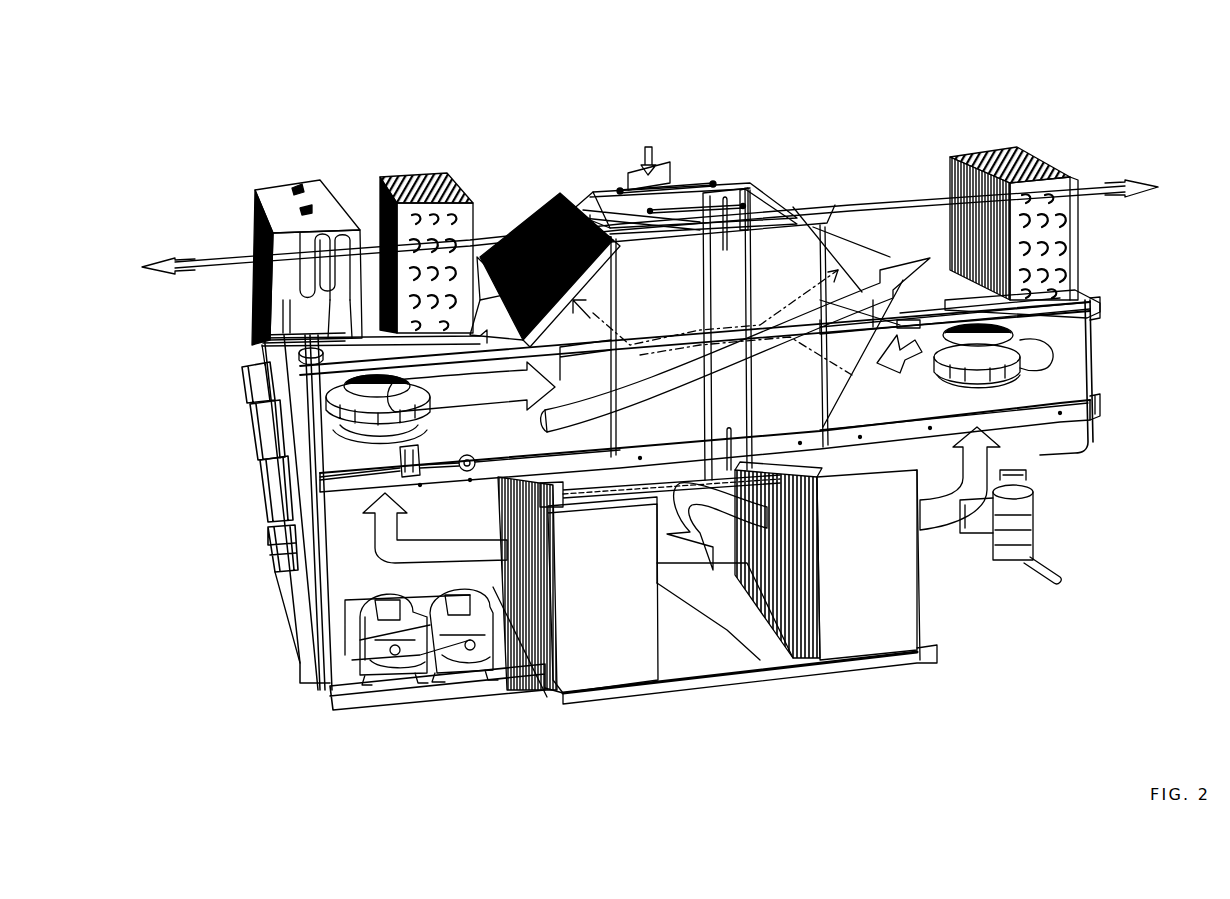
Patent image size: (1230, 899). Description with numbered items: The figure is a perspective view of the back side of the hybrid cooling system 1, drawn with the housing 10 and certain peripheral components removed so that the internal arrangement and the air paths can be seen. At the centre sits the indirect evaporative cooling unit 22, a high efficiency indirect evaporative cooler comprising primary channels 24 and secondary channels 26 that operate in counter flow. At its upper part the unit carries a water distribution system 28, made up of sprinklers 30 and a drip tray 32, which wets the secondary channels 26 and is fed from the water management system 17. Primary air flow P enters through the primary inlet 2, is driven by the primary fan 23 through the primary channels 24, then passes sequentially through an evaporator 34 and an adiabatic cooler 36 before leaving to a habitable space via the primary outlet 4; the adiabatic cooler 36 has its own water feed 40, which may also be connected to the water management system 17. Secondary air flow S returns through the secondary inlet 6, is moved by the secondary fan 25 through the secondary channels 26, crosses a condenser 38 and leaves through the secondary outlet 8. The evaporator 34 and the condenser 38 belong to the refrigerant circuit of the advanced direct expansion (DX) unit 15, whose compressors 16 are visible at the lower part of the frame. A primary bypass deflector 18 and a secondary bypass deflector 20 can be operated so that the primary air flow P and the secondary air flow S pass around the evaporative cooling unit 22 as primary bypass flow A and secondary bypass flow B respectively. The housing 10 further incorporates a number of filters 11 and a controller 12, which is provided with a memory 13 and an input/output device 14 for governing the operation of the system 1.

The hybrid cooling system 1 is at (320, 88).
The primary inlet 2 is at (900, 620).
The primary outlet 4 is at (253, 273).
The secondary inlet 6 is at (660, 517).
The secondary outlet 8 is at (1077, 237).
The housing 10 is at (747, 650).
The filters 11 is at (593, 660).
The controller 12 is at (300, 553).
The memory 13 is at (250, 380).
The input/output device 14 is at (262, 440).
The advanced direct expansion (DX) unit 15 is at (527, 260).
The compressors 16 is at (390, 647).
The water management system 17 is at (1030, 527).
The primary bypass deflector 18 is at (653, 172).
The secondary bypass deflector 20 is at (793, 228).
The indirect evaporative cooling unit 22 is at (637, 262).
The primary fan 23 is at (1060, 423).
The primary channels 24 is at (547, 262).
The secondary fan 25 is at (252, 408).
The secondary channels 26 is at (907, 247).
The water distribution system 28 is at (692, 195).
The sprinklers 30 is at (725, 193).
The drip tray 32 is at (752, 280).
The evaporator 34 is at (403, 177).
The adiabatic cooler 36 is at (275, 195).
The condenser 38 is at (1053, 175).
The water feed 40 is at (297, 185).
The primary bypass flow A is at (490, 300).
The secondary bypass flow B is at (907, 253).
The primary air flow P is at (167, 255).
The secondary air flow S is at (500, 258).